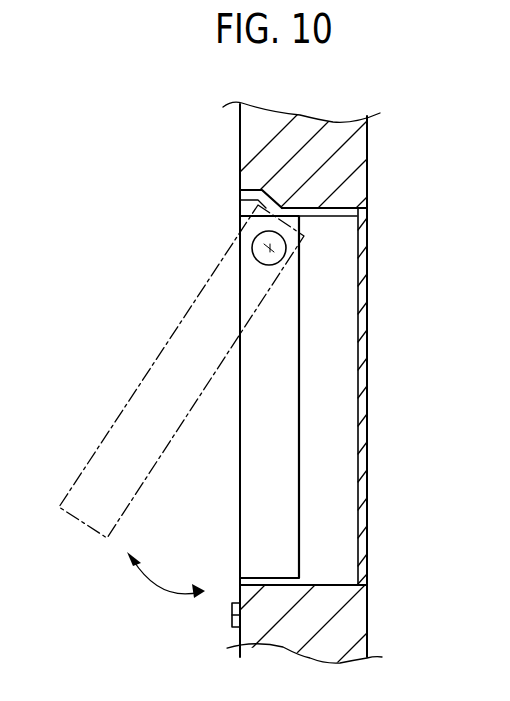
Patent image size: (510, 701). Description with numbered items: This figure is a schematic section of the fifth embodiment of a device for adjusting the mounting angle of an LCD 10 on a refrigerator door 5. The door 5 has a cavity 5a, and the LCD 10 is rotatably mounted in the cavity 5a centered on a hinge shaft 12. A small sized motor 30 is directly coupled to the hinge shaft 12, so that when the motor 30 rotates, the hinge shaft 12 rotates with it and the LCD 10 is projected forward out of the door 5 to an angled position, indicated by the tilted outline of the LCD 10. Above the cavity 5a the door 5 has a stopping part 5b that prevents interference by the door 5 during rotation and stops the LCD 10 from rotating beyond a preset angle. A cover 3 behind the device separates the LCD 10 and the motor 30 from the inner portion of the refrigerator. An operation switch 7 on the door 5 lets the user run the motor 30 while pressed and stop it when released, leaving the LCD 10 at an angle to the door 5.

The refrigerator door 5 is at (355, 150).
The stopping part 5b is at (240, 200).
The cavity 5a is at (345, 520).
The cover 3 is at (368, 385).
The LCD 10 is at (257, 498).
The hinge shaft 12 is at (240, 233).
The motor 30 is at (286, 247).
The operation switch 7 is at (232, 614).